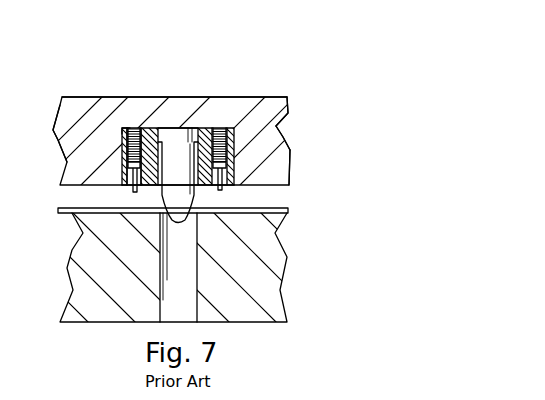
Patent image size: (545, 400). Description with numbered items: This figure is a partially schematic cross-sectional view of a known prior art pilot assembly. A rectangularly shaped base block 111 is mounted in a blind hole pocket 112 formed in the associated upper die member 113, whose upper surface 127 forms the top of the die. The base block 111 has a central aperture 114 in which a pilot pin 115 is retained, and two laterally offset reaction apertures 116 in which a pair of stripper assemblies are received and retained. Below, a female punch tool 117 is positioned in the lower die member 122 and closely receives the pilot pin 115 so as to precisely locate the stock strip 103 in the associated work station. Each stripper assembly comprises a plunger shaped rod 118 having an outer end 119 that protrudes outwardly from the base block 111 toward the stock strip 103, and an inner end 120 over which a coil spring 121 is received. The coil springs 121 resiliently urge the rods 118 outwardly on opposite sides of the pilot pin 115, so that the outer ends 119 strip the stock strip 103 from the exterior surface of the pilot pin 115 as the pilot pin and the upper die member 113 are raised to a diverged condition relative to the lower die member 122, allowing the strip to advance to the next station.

The stock strip 103 is at (68, 216).
The base block 111 is at (277, 96).
The blind hole pocket 112 is at (283, 165).
The upper die member 113 is at (287, 114).
The central aperture 114 is at (215, 130).
The pilot pin 115 is at (176, 147).
The reaction apertures 116 is at (134, 128).
The female punch tool 117 is at (192, 307).
The plunger shaped rod 118 is at (281, 137).
The outer end 119 is at (228, 188).
The inner end 120 is at (139, 128).
The coil spring 121 is at (122, 134).
The lower die member 122 is at (280, 267).
The upper surface 127 is at (77, 96).